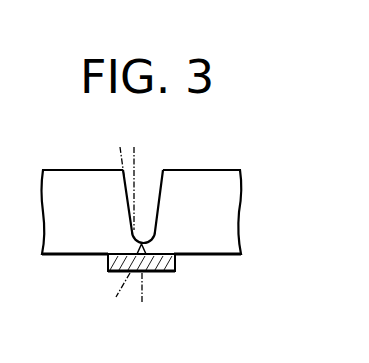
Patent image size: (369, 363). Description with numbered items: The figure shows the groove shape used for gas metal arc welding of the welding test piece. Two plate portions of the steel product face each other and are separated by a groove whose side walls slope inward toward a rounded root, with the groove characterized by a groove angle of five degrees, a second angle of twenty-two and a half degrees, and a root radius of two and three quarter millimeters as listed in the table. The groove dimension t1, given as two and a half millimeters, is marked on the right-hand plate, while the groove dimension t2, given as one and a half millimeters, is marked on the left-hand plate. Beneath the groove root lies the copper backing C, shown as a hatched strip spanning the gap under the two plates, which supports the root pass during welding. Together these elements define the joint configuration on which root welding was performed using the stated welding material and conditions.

The groove dimension t1 is at (190, 268).
The groove dimension t2 is at (95, 229).
The copper backing C is at (166, 274).